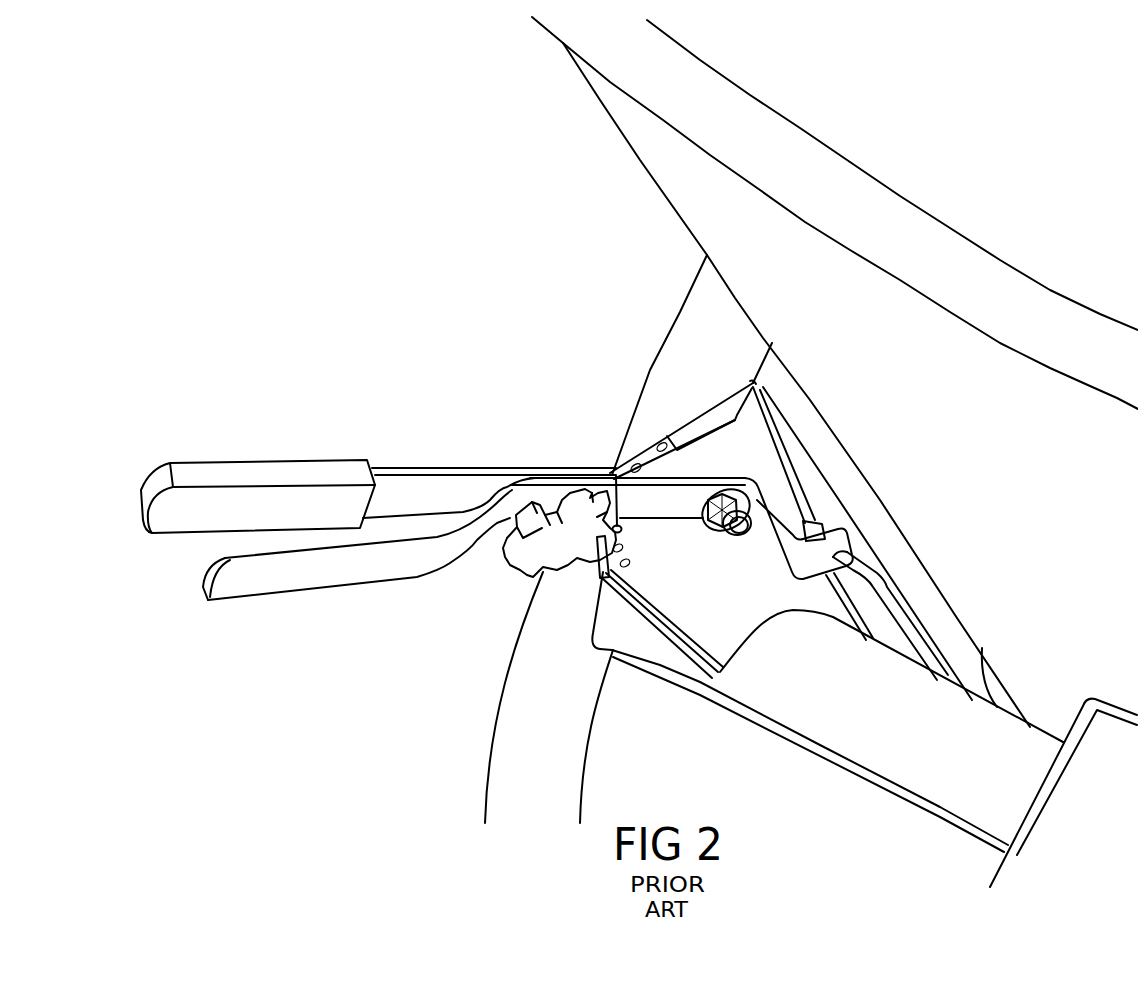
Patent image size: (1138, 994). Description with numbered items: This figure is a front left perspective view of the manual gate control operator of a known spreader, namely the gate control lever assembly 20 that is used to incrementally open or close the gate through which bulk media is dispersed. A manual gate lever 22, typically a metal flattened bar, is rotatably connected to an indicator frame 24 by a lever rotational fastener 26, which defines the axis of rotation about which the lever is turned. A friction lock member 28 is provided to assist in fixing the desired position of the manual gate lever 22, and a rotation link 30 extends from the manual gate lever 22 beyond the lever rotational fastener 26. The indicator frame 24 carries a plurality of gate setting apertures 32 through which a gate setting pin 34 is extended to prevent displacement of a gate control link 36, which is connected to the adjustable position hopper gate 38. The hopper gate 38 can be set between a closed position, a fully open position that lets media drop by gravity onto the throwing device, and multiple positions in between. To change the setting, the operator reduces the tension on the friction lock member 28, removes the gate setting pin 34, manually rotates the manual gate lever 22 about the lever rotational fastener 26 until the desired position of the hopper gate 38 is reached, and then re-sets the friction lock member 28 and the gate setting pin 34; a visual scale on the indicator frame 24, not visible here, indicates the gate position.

The gate control lever assembly 20 is at (370, 425).
The manual gate lever 22 is at (402, 493).
The indicator frame 24 is at (647, 455).
The lever rotational fastener 26 is at (750, 480).
The friction lock member 28 is at (550, 496).
The rotation link 30 is at (850, 542).
The gate setting apertures 32 is at (617, 477).
The gate setting pin 34 is at (600, 567).
The gate control link 36 is at (890, 598).
The adjustable position hopper gate 38 is at (1003, 700).